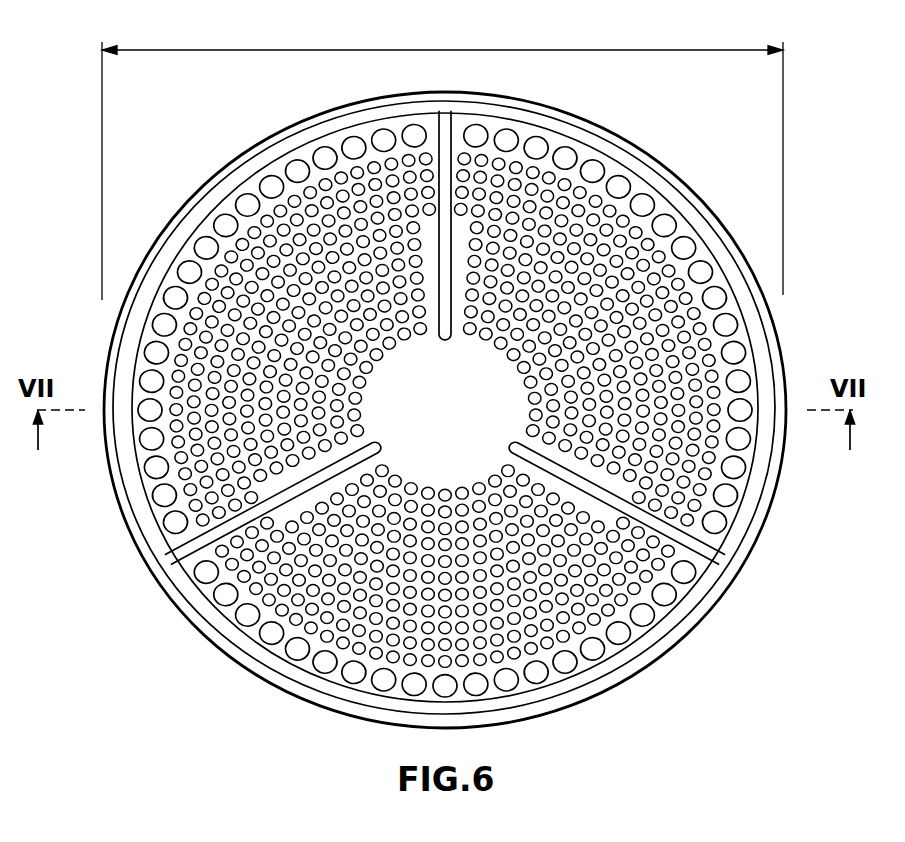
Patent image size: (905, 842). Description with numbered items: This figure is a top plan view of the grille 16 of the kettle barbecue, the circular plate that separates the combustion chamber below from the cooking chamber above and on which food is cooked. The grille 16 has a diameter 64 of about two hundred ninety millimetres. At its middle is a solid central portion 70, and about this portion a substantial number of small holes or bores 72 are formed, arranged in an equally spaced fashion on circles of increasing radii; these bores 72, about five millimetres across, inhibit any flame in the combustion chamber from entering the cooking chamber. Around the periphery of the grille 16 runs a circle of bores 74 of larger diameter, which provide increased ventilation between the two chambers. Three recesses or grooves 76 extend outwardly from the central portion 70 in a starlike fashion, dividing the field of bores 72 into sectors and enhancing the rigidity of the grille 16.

The grille 16 is at (675, 152).
The diameter 64 is at (452, 49).
The solid central portion 70 is at (416, 412).
The holes or bores 72 is at (226, 258).
The bores 74 is at (292, 162).
The recesses or grooves 76 is at (426, 142).